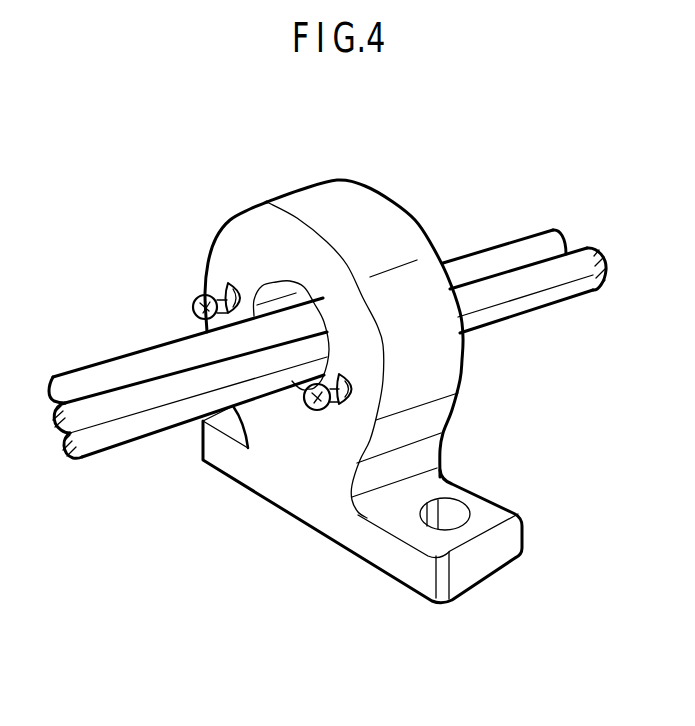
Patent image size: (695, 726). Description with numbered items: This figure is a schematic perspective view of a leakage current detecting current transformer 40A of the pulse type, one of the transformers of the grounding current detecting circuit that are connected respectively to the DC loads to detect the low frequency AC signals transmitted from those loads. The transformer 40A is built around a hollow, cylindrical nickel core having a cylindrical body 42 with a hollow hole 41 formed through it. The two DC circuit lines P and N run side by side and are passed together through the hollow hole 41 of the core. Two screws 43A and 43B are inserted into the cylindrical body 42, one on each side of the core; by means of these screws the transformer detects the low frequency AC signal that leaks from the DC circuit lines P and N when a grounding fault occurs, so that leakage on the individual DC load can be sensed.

The leakage current detecting current transformer 40A is at (461, 256).
The hollow hole 41 is at (268, 293).
The cylindrical body 42 is at (393, 219).
The screw 43A is at (205, 297).
The screw 43B is at (318, 407).
The DC circuit line P is at (77, 380).
The DC circuit line N is at (123, 433).